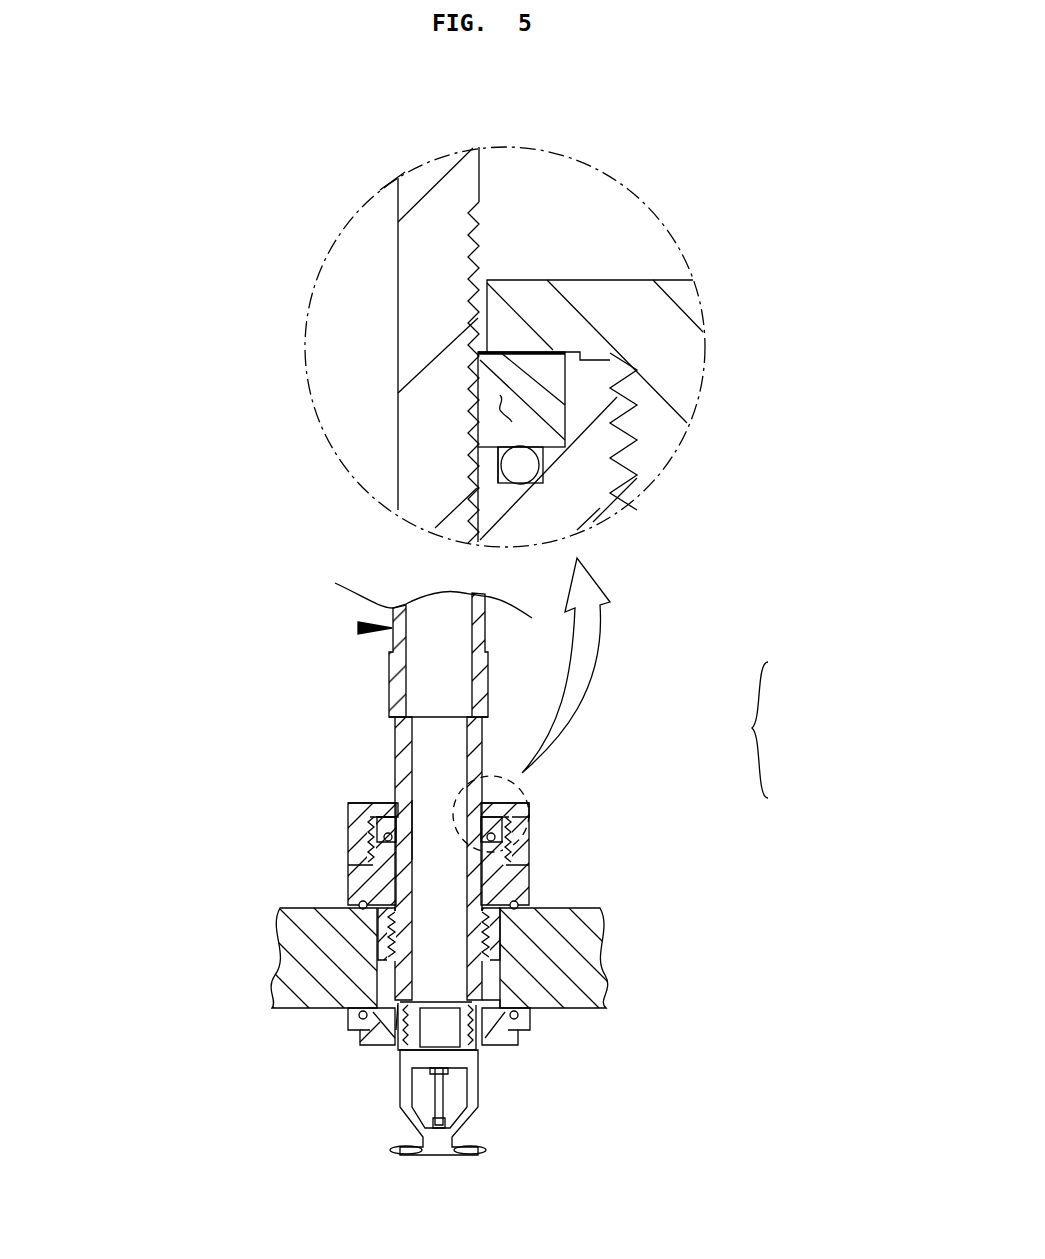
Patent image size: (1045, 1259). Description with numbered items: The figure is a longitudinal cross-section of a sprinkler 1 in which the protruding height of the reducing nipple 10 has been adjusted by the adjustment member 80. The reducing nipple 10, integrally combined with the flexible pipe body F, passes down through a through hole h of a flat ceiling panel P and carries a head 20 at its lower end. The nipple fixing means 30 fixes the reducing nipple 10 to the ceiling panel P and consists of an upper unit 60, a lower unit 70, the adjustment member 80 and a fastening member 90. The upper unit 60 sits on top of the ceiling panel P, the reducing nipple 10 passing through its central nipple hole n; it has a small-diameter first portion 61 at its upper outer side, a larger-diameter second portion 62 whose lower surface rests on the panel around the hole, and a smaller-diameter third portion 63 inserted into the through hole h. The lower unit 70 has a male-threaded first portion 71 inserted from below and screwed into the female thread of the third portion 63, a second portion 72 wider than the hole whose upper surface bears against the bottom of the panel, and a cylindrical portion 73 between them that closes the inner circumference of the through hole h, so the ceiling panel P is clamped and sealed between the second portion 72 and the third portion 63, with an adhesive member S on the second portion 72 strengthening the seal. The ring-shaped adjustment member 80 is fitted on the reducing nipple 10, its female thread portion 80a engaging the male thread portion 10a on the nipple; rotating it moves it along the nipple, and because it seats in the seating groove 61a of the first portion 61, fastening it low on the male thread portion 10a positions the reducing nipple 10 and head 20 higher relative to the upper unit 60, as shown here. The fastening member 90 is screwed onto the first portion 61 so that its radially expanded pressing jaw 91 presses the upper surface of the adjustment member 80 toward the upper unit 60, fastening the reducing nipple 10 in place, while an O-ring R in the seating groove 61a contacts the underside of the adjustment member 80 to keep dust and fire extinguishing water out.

The sprinkler 1 is at (717, 528).
The reducing nipple 10 is at (513, 180).
The male thread portion 10a is at (473, 247).
The head 20 is at (477, 1080).
The nipple fixing means 30 is at (763, 731).
The upper unit 60 is at (350, 888).
The first portion 61 is at (374, 830).
The seating groove 61a is at (520, 460).
The second portion 62 is at (523, 883).
The third portion 63 is at (497, 930).
The lower unit 70 is at (368, 1045).
The first portion 71 is at (360, 940).
The second portion 72 is at (345, 1032).
The cylindrical portion 73 is at (493, 1003).
The adjustment member 80 is at (527, 383).
The female thread portion 80a is at (510, 408).
The fastening member 90 is at (648, 283).
The pressing jaw 91 is at (513, 308).
The flexible pipe body F is at (358, 628).
The ceiling panel P is at (277, 908).
The O-ring R is at (617, 403).
The adhesive member S is at (358, 1015).
The through hole h is at (488, 1043).
The nipple hole n is at (435, 850).